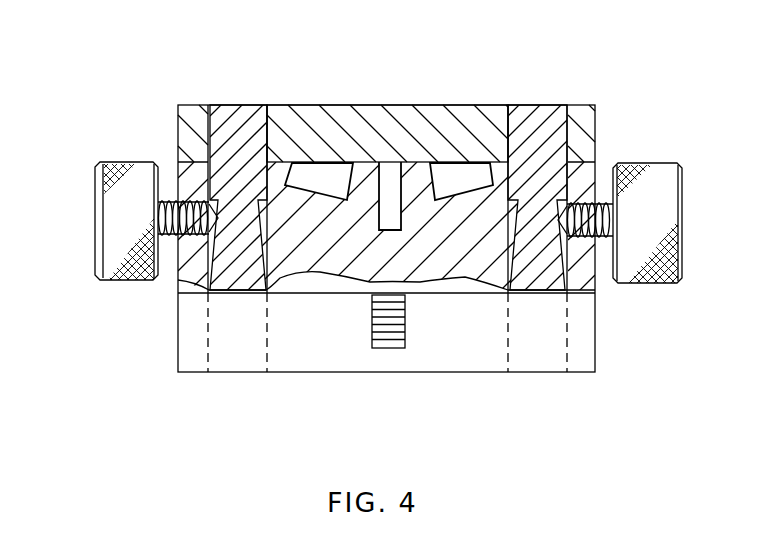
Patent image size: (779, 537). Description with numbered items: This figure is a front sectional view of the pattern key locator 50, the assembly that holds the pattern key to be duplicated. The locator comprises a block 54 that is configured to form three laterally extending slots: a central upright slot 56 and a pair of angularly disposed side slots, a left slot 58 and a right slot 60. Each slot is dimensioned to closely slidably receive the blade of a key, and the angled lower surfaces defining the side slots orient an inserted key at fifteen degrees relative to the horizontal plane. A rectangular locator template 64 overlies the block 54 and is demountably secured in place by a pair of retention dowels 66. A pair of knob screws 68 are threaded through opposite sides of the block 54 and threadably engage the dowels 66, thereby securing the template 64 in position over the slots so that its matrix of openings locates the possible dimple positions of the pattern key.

The pattern key locator 50 is at (163, 80).
The block 54 is at (390, 268).
The central upright slot 56 is at (383, 172).
The left side slot 58 is at (328, 173).
The right side slot 60 is at (452, 170).
The locator template 64 is at (320, 117).
The retention dowels 66 is at (242, 123).
The knob screws 68 is at (115, 217).